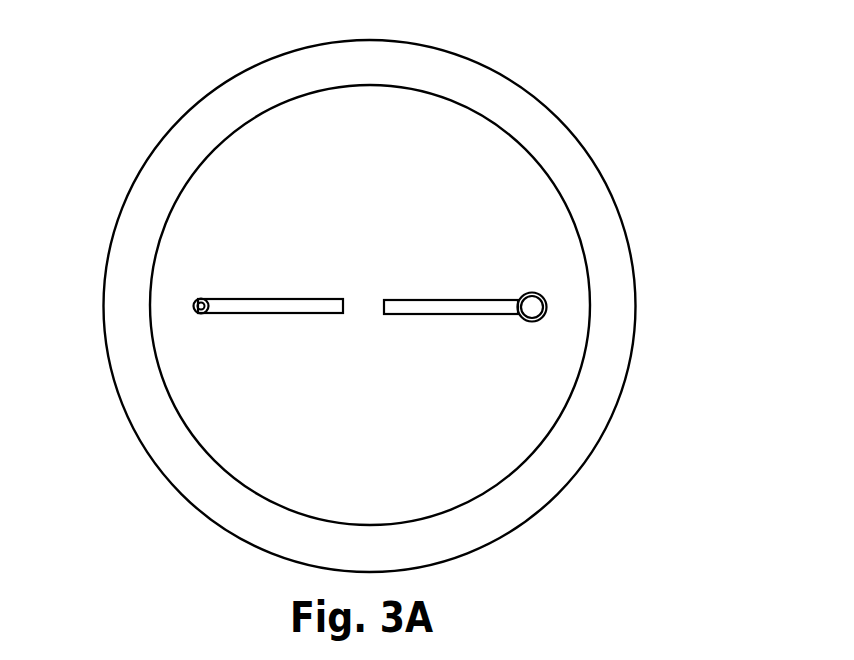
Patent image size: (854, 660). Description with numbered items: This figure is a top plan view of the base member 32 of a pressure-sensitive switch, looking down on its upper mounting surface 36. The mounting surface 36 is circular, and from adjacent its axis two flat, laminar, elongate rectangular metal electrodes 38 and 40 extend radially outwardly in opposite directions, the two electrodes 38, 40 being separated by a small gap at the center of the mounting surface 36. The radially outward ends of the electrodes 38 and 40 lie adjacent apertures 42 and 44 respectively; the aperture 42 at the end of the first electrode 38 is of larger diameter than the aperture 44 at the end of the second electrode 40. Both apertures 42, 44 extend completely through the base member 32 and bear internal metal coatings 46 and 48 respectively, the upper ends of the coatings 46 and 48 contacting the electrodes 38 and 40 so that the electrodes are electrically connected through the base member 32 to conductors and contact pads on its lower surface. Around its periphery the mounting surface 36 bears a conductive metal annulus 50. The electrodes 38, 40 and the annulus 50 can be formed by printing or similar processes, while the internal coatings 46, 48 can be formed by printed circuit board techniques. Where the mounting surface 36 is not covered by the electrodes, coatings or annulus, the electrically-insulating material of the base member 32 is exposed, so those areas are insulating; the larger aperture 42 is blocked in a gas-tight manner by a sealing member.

The base member 32 is at (588, 102).
The mounting surface 36 is at (342, 120).
The first electrode 38 is at (417, 305).
The second electrode 40 is at (307, 307).
The aperture 42 is at (533, 307).
The aperture 44 is at (196, 301).
The internal metal coating 46 is at (547, 317).
The internal metal coating 48 is at (194, 307).
The conductive metal annulus 50 is at (545, 475).